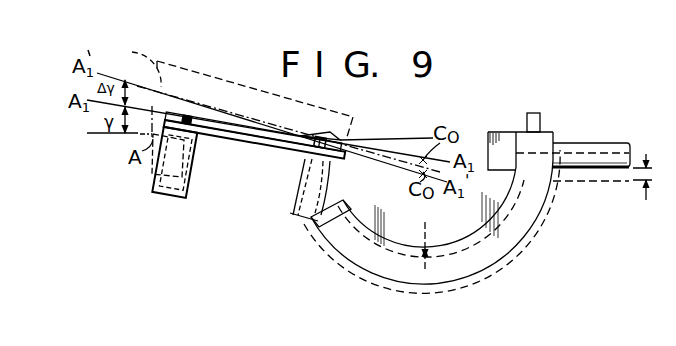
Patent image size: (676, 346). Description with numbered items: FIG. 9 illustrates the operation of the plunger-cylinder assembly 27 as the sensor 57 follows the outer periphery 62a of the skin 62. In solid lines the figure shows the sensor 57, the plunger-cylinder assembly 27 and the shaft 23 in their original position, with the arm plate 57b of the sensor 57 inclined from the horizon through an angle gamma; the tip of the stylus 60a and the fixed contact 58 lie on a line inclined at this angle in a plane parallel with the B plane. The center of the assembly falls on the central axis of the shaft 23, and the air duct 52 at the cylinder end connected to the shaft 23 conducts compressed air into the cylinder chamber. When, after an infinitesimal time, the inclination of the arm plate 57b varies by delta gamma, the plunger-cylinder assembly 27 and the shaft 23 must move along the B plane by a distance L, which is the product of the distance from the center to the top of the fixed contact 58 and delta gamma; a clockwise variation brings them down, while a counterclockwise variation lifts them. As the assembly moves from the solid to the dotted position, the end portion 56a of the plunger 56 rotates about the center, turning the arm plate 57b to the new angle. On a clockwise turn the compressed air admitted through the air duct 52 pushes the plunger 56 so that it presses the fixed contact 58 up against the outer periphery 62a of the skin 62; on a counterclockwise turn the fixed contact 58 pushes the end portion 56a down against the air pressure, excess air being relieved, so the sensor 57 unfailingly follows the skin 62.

The shaft 23 is at (612, 144).
The plunger-cylinder assembly 27 is at (547, 219).
The air duct 52 is at (533, 113).
The plunger 56 is at (522, 252).
The end portion of the plunger 56a is at (303, 175).
The sensor 57 is at (350, 162).
The arm plate 57b is at (251, 140).
The fixed contact 58 is at (343, 138).
The stylus 60a is at (200, 119).
The skin 62 is at (203, 83).
The outer periphery of the skin 62a is at (125, 62).